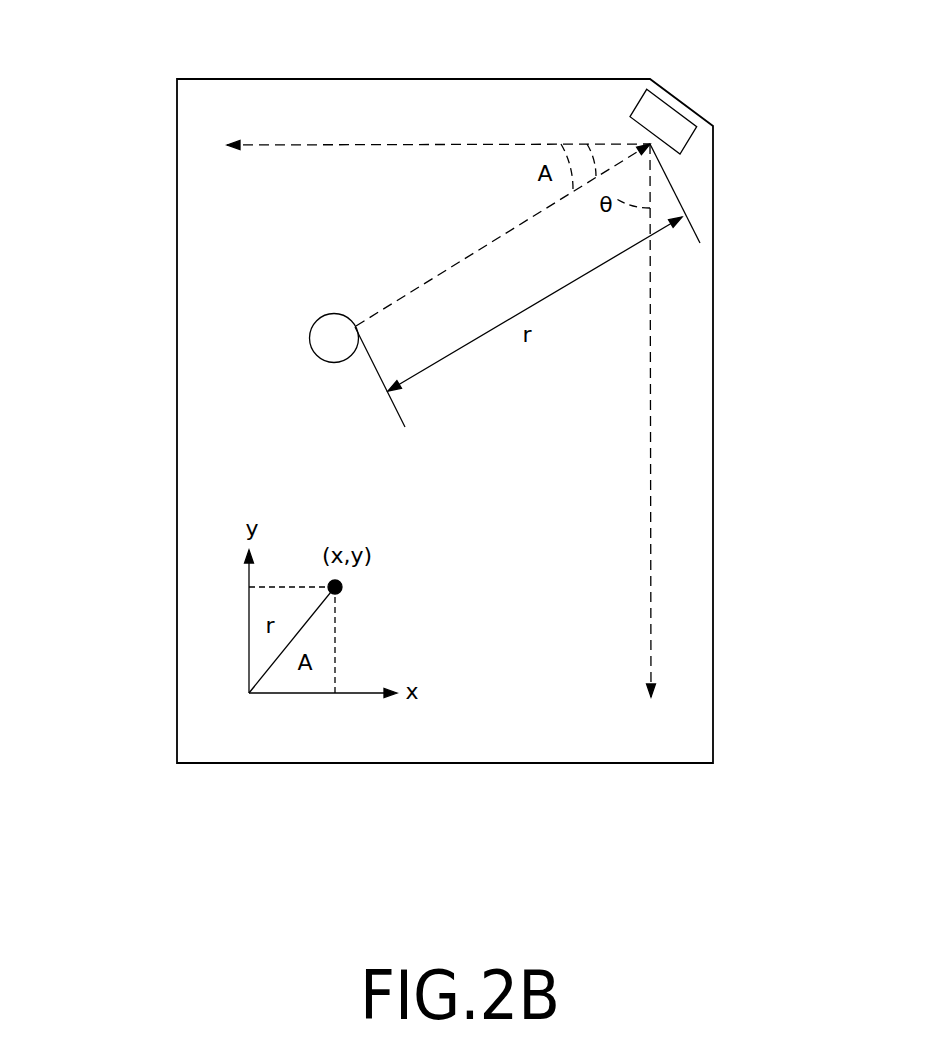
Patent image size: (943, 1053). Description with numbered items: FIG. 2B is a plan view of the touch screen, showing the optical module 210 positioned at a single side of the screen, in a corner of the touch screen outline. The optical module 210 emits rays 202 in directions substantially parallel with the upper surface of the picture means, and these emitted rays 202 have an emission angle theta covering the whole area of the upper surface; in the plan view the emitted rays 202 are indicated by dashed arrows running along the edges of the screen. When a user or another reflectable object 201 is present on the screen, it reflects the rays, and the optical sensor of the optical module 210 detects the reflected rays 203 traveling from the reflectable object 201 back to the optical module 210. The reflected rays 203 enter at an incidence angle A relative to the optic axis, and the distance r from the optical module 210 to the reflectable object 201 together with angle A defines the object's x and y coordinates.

The reflectable object 201 is at (323, 341).
The emitted rays 202 is at (525, 142).
The reflected rays 203 is at (460, 260).
The optical module 210 is at (693, 83).